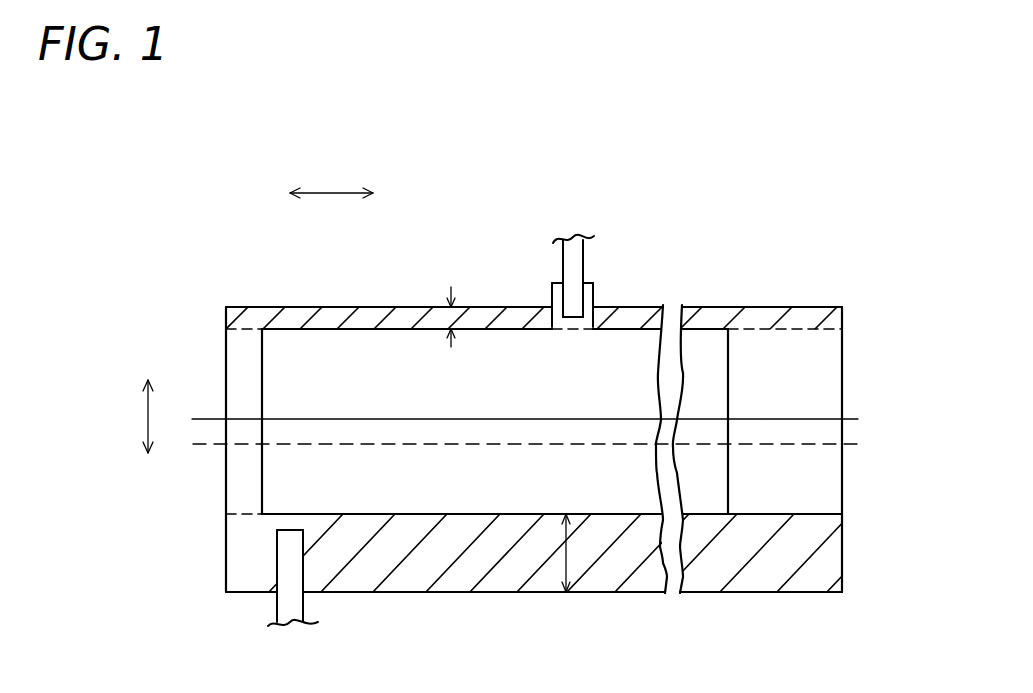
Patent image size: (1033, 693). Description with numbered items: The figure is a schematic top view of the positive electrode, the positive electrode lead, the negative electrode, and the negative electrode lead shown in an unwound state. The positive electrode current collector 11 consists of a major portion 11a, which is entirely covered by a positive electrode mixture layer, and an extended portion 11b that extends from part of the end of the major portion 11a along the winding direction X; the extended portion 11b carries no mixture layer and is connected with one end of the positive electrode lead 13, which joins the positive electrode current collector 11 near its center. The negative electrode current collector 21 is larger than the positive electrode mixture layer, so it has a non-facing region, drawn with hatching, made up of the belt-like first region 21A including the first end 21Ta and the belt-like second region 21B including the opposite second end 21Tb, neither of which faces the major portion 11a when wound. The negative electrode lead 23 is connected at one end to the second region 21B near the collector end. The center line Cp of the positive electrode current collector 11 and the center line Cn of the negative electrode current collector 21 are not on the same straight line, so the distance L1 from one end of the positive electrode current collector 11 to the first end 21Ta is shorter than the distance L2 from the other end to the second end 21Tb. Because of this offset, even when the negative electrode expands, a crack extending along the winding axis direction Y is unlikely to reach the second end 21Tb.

The positive electrode current collector 11 is at (646, 296).
The major portion 11a is at (604, 357).
The extended portion 11b is at (587, 298).
The positive electrode lead 13 is at (577, 256).
The negative electrode current collector 21 is at (849, 370).
The first region 21A is at (840, 316).
The second region 21B is at (492, 578).
The first end 21Ta is at (302, 305).
The second end 21Tb is at (243, 599).
The negative electrode lead 23 is at (297, 572).
The center line Cp is at (542, 423).
The center line Cn is at (542, 457).
The distance L1 is at (443, 306).
The distance L2 is at (578, 555).
The winding direction X is at (331, 181).
The winding axis direction Y is at (138, 416).